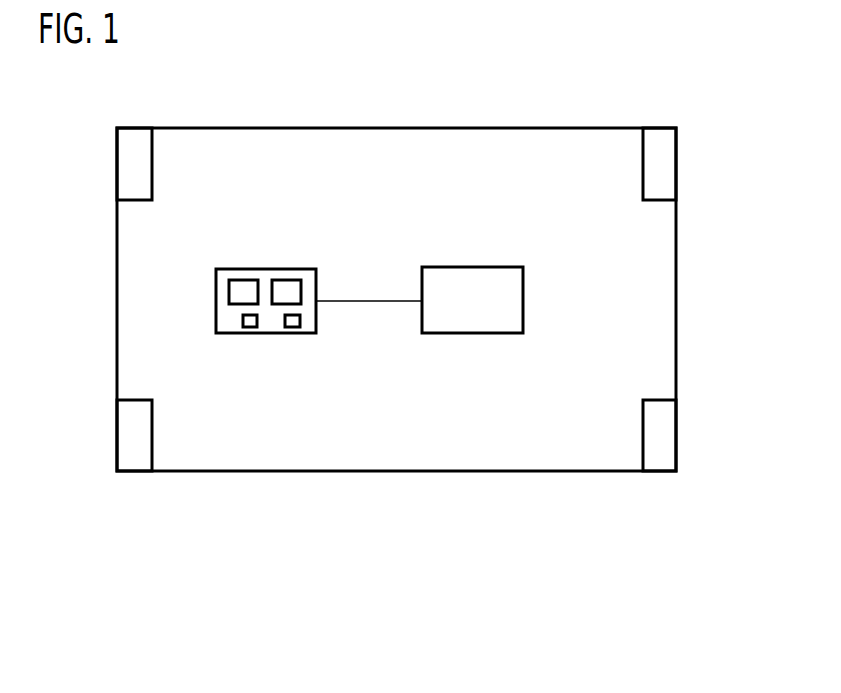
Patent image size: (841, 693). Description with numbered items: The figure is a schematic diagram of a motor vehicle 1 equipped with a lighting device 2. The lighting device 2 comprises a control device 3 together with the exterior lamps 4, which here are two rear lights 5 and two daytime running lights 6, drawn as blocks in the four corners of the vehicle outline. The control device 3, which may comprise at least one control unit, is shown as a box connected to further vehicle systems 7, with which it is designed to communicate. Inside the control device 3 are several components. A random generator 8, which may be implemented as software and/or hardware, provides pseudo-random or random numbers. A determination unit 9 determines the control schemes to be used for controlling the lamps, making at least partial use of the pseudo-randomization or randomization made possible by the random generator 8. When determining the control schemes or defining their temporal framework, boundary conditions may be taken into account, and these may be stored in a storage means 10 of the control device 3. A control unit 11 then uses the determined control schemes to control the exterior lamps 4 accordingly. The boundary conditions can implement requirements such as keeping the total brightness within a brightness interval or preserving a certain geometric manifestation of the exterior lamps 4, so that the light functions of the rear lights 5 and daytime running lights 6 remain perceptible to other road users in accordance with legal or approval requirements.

The motor vehicle 1 is at (369, 127).
The lighting device 2 is at (306, 239).
The control device 3 is at (318, 279).
The exterior lamps 4 is at (164, 169).
The rear light 5 is at (127, 169).
The daytime running light 6 is at (667, 157).
The further vehicle systems 7 is at (470, 333).
The random generator 8 is at (250, 327).
The determination unit 9 is at (243, 280).
The storage means 10 is at (292, 327).
The control unit 11 is at (283, 280).